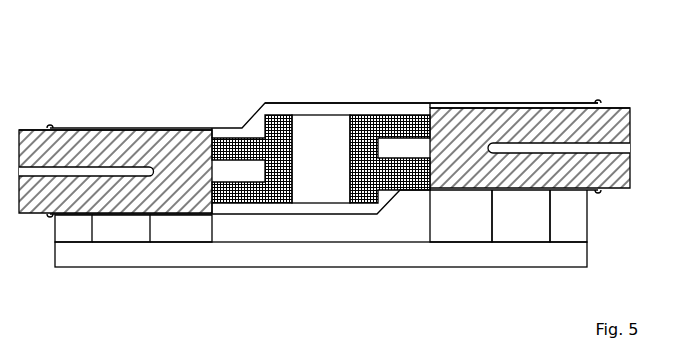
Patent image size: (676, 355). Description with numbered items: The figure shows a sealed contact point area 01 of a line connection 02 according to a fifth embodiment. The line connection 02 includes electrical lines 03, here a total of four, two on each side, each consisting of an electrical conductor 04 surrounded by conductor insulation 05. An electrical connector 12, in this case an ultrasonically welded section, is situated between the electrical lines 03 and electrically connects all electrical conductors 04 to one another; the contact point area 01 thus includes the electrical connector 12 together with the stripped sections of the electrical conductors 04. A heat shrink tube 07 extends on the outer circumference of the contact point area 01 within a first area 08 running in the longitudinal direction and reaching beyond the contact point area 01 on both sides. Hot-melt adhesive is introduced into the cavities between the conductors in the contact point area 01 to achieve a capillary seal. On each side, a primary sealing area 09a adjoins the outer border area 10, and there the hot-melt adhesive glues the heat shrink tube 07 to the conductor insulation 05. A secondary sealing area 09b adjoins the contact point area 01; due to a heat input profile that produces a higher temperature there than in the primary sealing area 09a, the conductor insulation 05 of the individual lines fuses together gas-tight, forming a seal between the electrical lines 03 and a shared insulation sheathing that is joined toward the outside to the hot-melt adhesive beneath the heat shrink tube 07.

The contact point area 01 is at (324, 172).
The line connection 02 is at (150, 88).
The electrical line 03 is at (25, 129).
The electrical conductor 04 is at (231, 137).
The conductor insulation 05 is at (113, 130).
The heat shrink tube 07 is at (448, 103).
The first area 08 is at (321, 254).
The primary sealing area 09a is at (321, 216).
The secondary sealing area 09b is at (321, 216).
The outer border area 10 is at (321, 216).
The electrical connector 12 is at (313, 123).